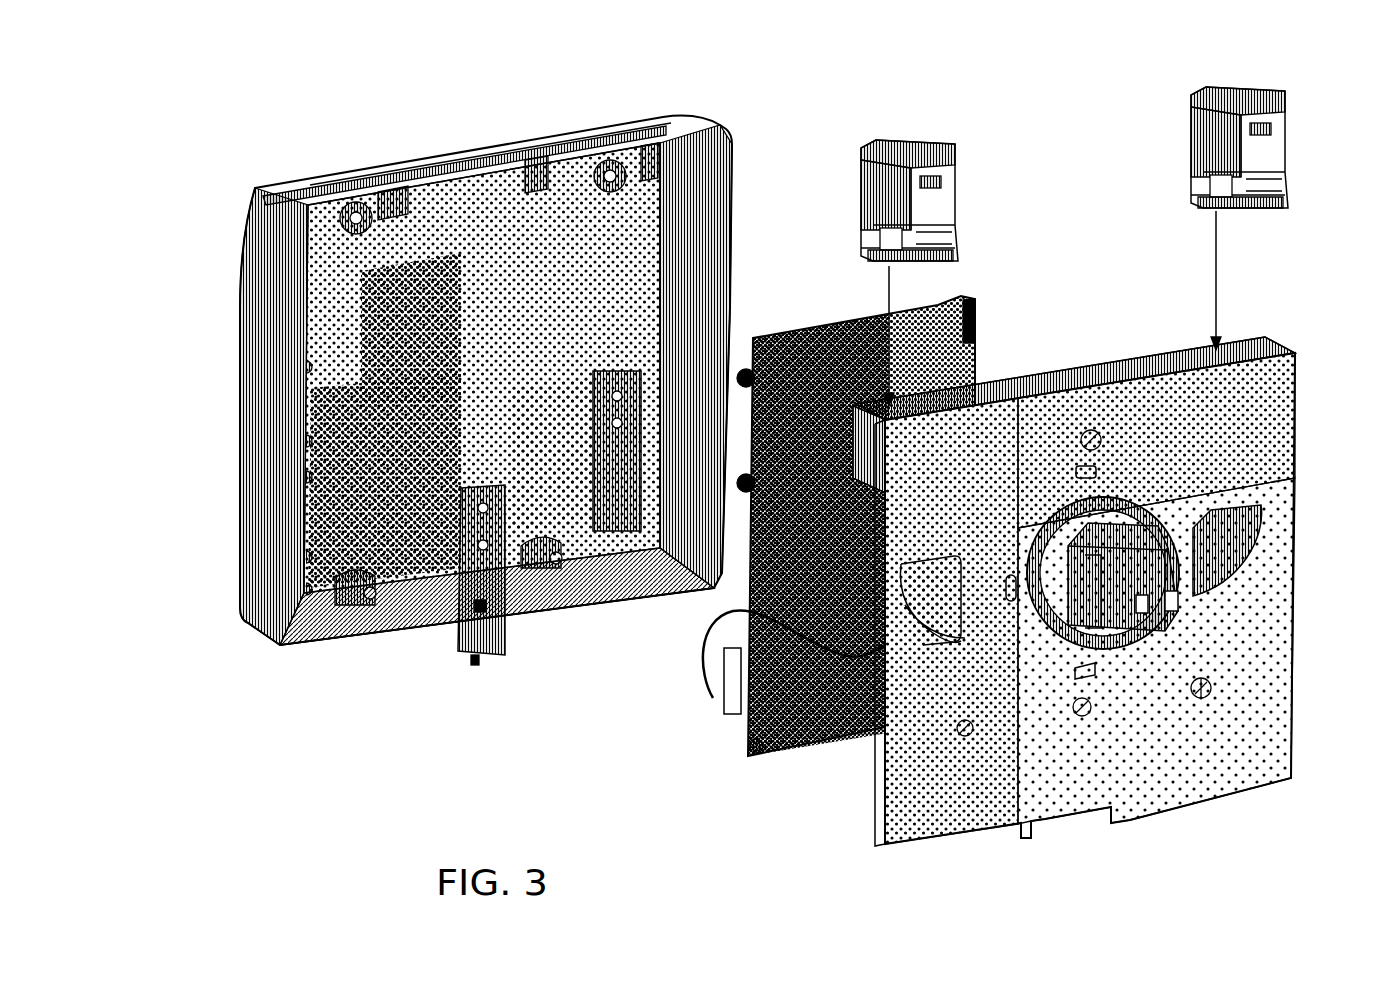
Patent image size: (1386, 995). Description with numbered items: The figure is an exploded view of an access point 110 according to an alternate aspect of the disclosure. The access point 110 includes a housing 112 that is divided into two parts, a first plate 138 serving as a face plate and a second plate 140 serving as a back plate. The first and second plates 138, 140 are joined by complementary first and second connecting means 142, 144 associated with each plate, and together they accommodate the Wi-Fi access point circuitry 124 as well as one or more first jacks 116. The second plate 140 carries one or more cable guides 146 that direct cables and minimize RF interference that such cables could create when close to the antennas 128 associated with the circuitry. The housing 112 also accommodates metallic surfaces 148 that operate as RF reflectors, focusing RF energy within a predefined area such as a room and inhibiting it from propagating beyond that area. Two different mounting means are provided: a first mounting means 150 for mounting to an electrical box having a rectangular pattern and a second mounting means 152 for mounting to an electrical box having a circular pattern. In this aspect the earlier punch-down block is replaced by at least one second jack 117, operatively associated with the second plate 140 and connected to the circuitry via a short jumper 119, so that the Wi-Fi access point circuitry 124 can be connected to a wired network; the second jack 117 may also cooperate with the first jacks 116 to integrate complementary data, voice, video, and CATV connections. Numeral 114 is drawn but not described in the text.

The access point 110 is at (212, 137).
The housing 112 is at (226, 641).
The vent grate 114 is at (360, 627).
The first jacks 116 is at (1187, 138).
The second jack 117 is at (1167, 608).
The short jumper 119 is at (810, 643).
The Wi-Fi access point circuitry 124 is at (815, 335).
The antennas 128 is at (450, 643).
The first plate 138 is at (238, 352).
The second plate 140 is at (1257, 437).
The first connecting means 142 is at (600, 168).
The second connecting means 144 is at (517, 597).
The cable guides 146 is at (1213, 543).
The metallic surfaces 148 is at (493, 345).
The first mounting means 150 is at (1090, 426).
The second mounting means 152 is at (1078, 466).